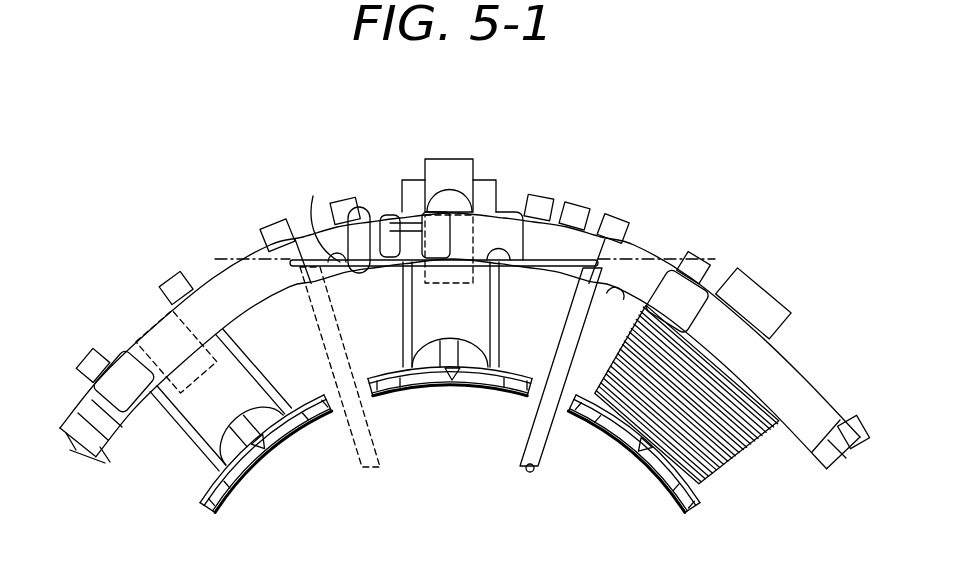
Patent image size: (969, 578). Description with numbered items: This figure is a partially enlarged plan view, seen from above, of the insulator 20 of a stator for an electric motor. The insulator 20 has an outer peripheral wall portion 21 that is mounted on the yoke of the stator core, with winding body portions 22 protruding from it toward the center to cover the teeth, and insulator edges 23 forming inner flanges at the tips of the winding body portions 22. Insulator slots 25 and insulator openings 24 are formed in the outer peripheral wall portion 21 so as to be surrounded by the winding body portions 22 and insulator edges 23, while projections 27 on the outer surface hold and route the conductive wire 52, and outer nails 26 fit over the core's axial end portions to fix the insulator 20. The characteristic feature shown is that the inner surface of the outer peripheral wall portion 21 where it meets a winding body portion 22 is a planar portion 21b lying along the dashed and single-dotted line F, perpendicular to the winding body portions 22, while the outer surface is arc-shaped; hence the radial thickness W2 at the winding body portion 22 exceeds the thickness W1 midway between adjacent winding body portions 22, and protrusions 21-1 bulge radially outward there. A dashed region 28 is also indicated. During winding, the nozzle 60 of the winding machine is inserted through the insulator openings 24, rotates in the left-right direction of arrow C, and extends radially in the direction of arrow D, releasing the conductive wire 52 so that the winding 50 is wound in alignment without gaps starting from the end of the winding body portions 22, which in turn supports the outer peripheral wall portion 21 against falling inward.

The insulator 20 is at (755, 188).
The outer peripheral wall portion 21 is at (237, 250).
The protrusion 21-1 is at (122, 332).
The planar portion 21b is at (342, 222).
The winding body portion 22 is at (243, 393).
The insulator edge 23 is at (252, 467).
The insulator opening 24 is at (561, 440).
The insulator slot 25 is at (337, 260).
The outer nail 26 is at (449, 158).
The projection 27 is at (703, 258).
The fastening region 28 is at (475, 215).
The winding 50 is at (758, 458).
The conductive wire 52 is at (388, 215).
The nozzle 60 is at (543, 468).
The radial thickness W1 is at (293, 310).
The radial thickness W2 is at (267, 347).
The dashed and single-dotted line F is at (672, 258).
The arrow C is at (490, 452).
The arrow D is at (566, 297).